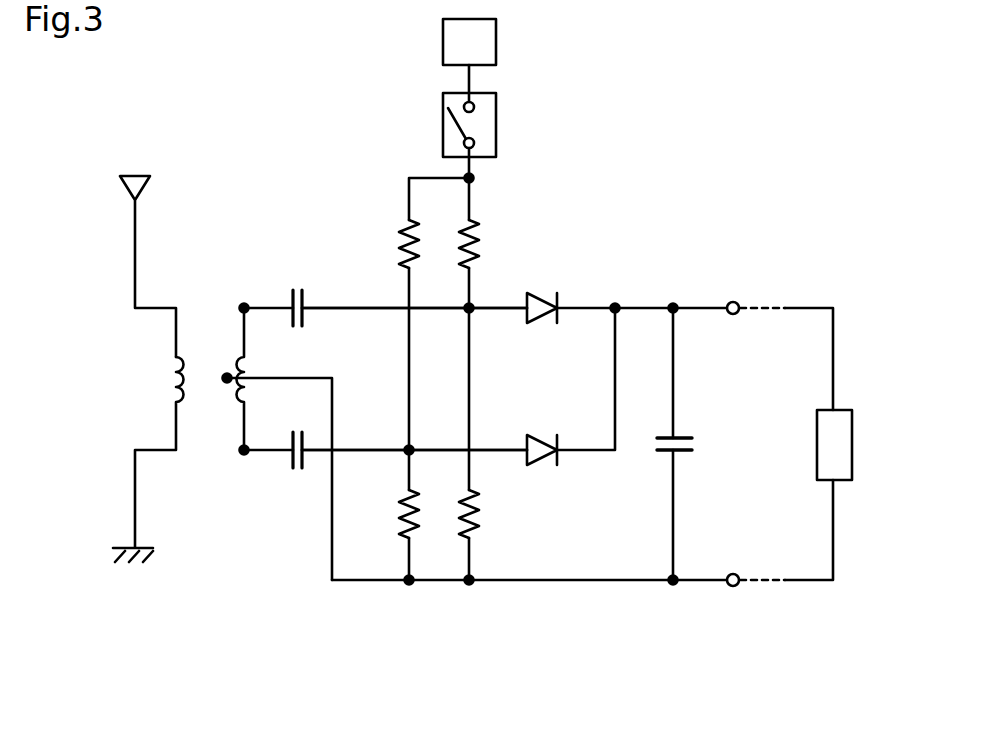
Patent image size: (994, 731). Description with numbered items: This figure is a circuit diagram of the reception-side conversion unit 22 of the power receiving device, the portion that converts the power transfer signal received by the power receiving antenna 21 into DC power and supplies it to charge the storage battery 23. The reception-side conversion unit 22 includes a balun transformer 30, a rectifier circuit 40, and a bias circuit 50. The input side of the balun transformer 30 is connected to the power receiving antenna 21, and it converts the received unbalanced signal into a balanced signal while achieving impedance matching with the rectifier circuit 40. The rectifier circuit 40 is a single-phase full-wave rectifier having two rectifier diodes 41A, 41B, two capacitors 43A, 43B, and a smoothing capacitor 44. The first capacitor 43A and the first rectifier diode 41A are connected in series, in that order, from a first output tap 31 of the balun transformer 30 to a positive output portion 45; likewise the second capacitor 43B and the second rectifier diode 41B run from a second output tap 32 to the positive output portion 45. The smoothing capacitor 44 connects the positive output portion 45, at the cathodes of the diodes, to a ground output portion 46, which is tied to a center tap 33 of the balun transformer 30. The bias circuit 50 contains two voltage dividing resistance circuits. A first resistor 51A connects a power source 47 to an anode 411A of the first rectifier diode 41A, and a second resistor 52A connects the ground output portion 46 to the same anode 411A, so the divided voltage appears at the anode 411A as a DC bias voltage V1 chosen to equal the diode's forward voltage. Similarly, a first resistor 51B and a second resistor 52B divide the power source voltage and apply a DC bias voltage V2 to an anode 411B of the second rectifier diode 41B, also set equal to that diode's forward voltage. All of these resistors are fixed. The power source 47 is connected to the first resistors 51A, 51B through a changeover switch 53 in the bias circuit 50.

The power receiving antenna 21 is at (124, 192).
The balun transformer 30 is at (204, 277).
The first output tap 31 is at (246, 304).
The second output tap 32 is at (242, 455).
The center tap 33 is at (224, 381).
The first capacitor 43A is at (291, 318).
The second capacitor 43B is at (291, 460).
The power source 47 is at (497, 42).
The changeover switch 53 is at (441, 127).
The bias circuit 50 is at (524, 169).
The first resistor 51A is at (471, 221).
The first resistor 51B is at (407, 221).
The second resistor 52A is at (478, 518).
The second resistor 52B is at (400, 520).
The DC bias voltage V1 is at (462, 325).
The DC bias voltage V2 is at (414, 435).
The rectifier circuit 40 is at (592, 243).
The anode 411A is at (508, 310).
The anode 411B is at (508, 448).
The first rectifier diode 41A is at (559, 297).
The second rectifier diode 41B is at (558, 463).
The smoothing capacitor 44 is at (683, 452).
The positive output portion 45 is at (733, 301).
The ground output portion 46 is at (733, 587).
The reception-side conversion unit 22 is at (801, 230).
The storage battery 23 is at (853, 442).